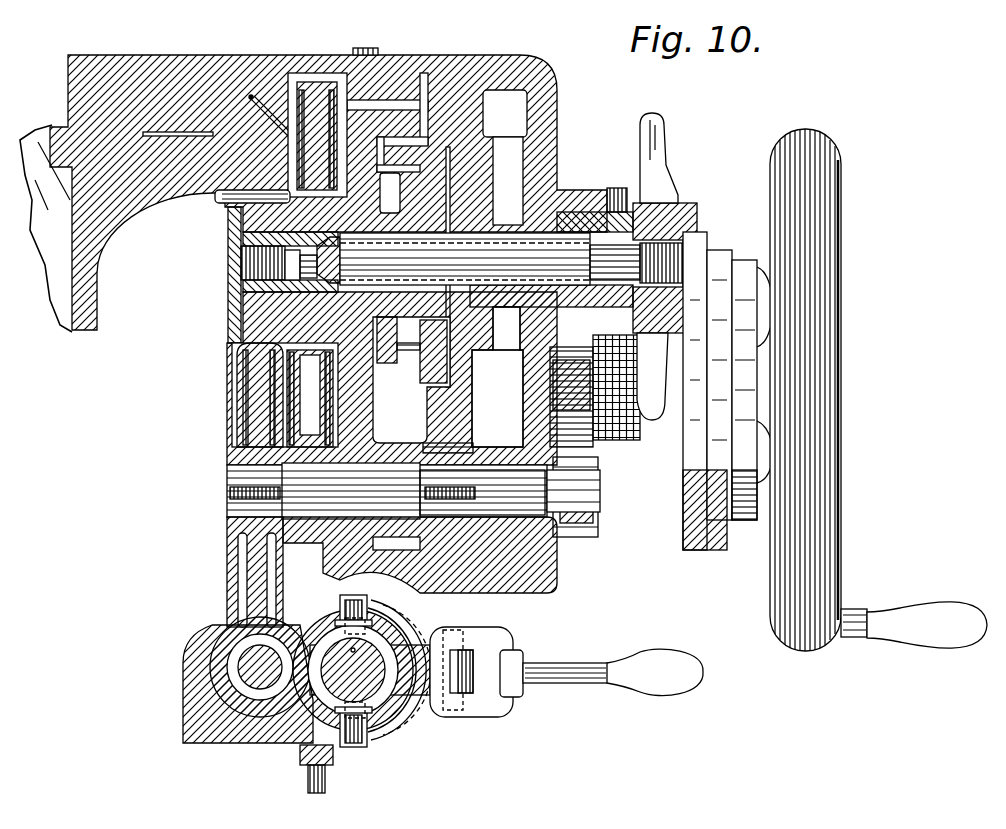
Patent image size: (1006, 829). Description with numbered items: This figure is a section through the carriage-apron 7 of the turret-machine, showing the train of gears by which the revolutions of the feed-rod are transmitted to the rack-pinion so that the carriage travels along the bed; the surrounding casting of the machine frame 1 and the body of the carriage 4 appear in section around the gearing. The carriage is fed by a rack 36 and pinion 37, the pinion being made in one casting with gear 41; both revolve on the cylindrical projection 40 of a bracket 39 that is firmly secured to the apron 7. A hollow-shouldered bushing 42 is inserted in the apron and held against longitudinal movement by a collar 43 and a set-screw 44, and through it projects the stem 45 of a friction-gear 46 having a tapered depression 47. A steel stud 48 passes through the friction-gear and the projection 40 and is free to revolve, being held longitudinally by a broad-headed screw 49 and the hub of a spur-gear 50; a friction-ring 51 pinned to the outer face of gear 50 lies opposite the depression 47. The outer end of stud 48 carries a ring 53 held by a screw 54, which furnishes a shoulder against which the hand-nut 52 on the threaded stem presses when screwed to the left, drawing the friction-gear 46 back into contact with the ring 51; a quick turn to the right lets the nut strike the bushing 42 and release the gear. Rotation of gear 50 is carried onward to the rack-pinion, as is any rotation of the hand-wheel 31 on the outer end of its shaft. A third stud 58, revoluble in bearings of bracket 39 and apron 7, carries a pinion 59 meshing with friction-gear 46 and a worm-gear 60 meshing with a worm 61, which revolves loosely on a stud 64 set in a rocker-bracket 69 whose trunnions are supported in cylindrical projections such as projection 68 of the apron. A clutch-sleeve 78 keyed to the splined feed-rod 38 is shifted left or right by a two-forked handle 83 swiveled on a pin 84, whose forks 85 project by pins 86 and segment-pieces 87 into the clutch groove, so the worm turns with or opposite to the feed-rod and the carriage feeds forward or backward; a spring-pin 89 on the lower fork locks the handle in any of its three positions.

The bracket 1 is at (120, 215).
The housing 4 is at (172, 60).
The apron 7 is at (557, 170).
The hand-wheel 31 is at (845, 355).
The rack 36 is at (214, 199).
The pinion 37 is at (226, 318).
The splined feed-rod 38 is at (408, 722).
The bracket 39 is at (358, 402).
The cylindrical projection 40 is at (342, 260).
The gear 41 is at (318, 84).
The hollow-shouldered bushing 42 is at (508, 200).
The collar 43 is at (594, 357).
The set-screw 44 is at (614, 188).
The stem 45 is at (504, 345).
The friction-gear 46 is at (470, 418).
The tapered depression 47 is at (434, 392).
The steel stud 48 is at (511, 259).
The broad-headed screw 49 is at (239, 266).
The spur-gear 50 is at (407, 372).
The friction-ring 51 is at (422, 380).
The hand-nut 52 is at (679, 188).
The ring 53 is at (698, 224).
The screw 54 is at (710, 246).
The third stud 58 is at (227, 472).
The pinion 59 is at (482, 492).
The worm-gear 60 is at (227, 555).
The worm 61 is at (222, 650).
The stud 64 is at (255, 665).
The cylindrical projection 68 is at (333, 573).
The rocker-bracket 69 is at (183, 700).
The clutch-sleeve 78 is at (452, 712).
The two-forked handle 83 is at (668, 690).
The pin 84 is at (470, 628).
The fork 85 is at (425, 620).
The pin 86 is at (345, 605).
The segment-piece 87 is at (336, 626).
The spring-pin 89 is at (305, 755).